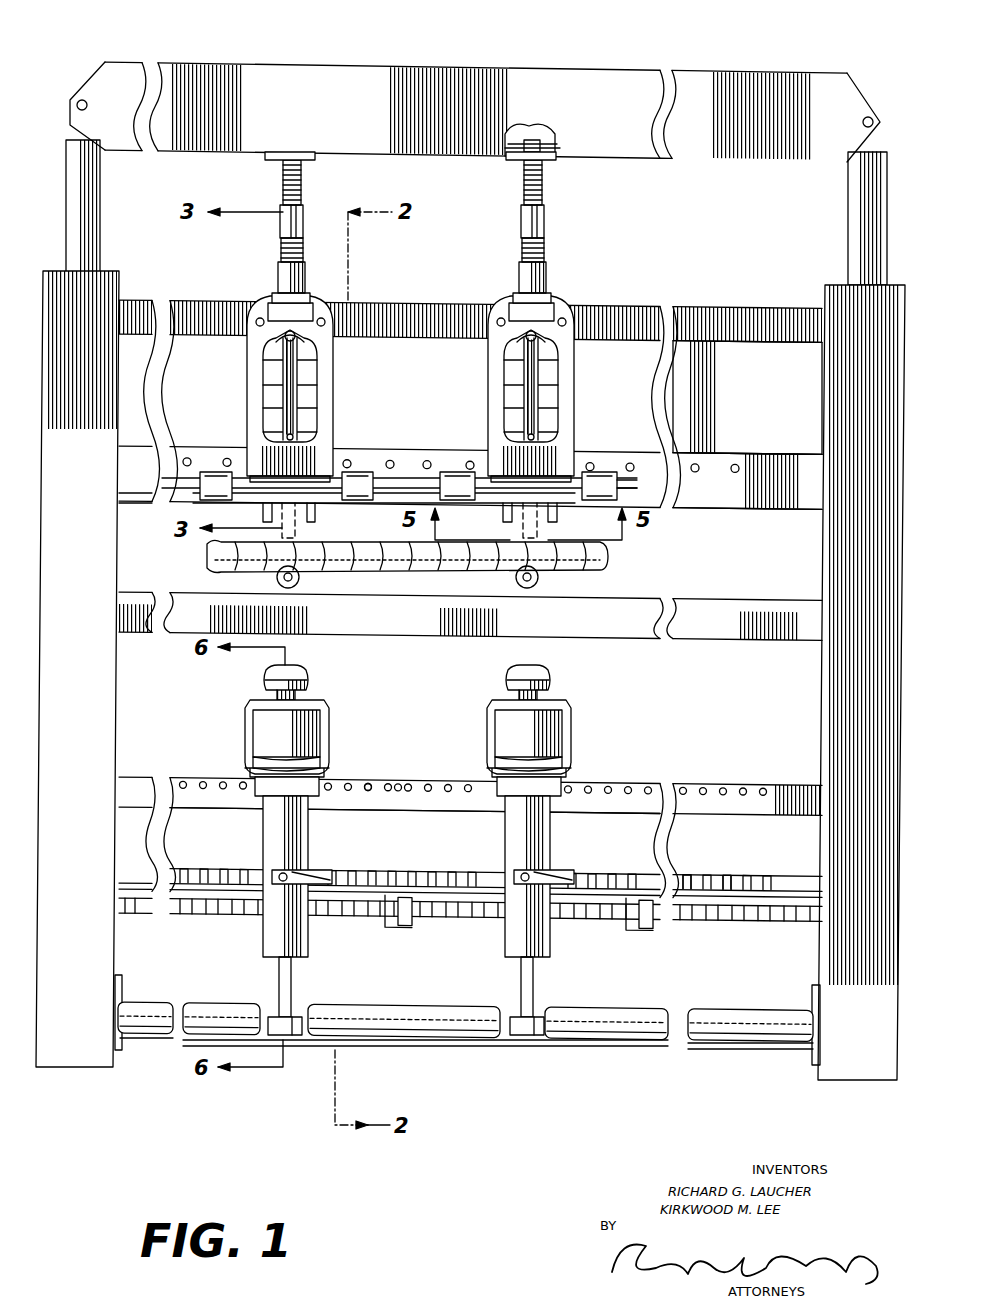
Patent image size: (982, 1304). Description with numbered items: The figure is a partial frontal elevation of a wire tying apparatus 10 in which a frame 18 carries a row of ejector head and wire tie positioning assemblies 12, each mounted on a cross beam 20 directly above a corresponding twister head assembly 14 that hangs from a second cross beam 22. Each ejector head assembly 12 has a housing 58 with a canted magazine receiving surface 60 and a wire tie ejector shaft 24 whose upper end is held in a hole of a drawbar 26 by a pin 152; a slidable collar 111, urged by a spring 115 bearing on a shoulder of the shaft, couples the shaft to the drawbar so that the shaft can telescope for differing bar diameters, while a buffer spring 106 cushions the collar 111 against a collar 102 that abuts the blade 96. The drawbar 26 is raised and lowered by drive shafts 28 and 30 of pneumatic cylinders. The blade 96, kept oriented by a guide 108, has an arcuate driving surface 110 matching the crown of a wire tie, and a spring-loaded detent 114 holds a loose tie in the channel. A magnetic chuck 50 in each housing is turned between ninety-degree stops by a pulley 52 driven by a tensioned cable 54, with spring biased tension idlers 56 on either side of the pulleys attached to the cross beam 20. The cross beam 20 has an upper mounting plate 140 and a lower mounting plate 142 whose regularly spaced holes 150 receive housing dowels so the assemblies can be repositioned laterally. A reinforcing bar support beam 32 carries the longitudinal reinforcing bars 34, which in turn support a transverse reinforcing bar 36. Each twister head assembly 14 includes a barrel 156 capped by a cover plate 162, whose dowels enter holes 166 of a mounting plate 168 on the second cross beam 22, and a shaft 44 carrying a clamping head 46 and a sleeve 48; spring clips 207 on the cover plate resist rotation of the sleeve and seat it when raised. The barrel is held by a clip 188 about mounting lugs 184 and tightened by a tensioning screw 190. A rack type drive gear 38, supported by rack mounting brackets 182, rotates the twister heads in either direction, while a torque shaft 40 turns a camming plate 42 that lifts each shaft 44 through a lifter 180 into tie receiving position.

The wire tying apparatus 10 is at (611, 58).
The ejector head and wire tie positioning assembly 12 is at (300, 280).
The twister head assembly 14 is at (328, 742).
The frame 18 is at (120, 292).
The cross beam 20 is at (635, 322).
The second cross beam 22 is at (772, 790).
The wire tie ejector shaft 24 is at (306, 220).
The drawbar 26 is at (369, 66).
The drive shaft 28 is at (88, 174).
The drive shaft 30 is at (854, 216).
The reinforcing bar support beam 32 is at (706, 604).
The longitudinal reinforcing bar 34 is at (278, 578).
The transverse reinforcing bar 36 is at (580, 566).
The rack type drive gear 38 is at (724, 914).
The torque shaft 40 is at (380, 1018).
The camming plate 42 is at (606, 1050).
The shaft 44 is at (278, 970).
The clamping head 46 is at (308, 676).
The sleeve 48 is at (262, 720).
The magnetic chuck 50 is at (308, 402).
The pulley 52 is at (320, 472).
The tensioned cable 54 is at (406, 484).
The spring biased tension idler 56 is at (216, 474).
The housing 58 is at (328, 328).
The canted magazine receiving surface 60 is at (254, 390).
The blade 96 is at (278, 298).
The collar 102 is at (522, 272).
The buffer spring 106 is at (522, 238).
The guide 108 is at (268, 312).
The arcuate driving surface 110 is at (302, 352).
The slidable collar 111 is at (306, 160).
The spring-loaded detent 114 is at (284, 336).
The spring 115 is at (282, 176).
The upper mounting plate 140 is at (756, 332).
The lower mounting plate 142 is at (758, 502).
The holes 150 is at (738, 466).
The pin 152 is at (550, 144).
The barrel 156 is at (286, 828).
The cover plate 162 is at (258, 794).
The holes 166 is at (396, 792).
The mounting plate 168 is at (606, 810).
The lifter 180 is at (294, 1016).
The rack mounting bracket 182 is at (408, 926).
The mounting lug 184 is at (740, 878).
The clip 188 is at (256, 878).
The tensioning screw 190 is at (300, 878).
The spring clip 207 is at (248, 744).